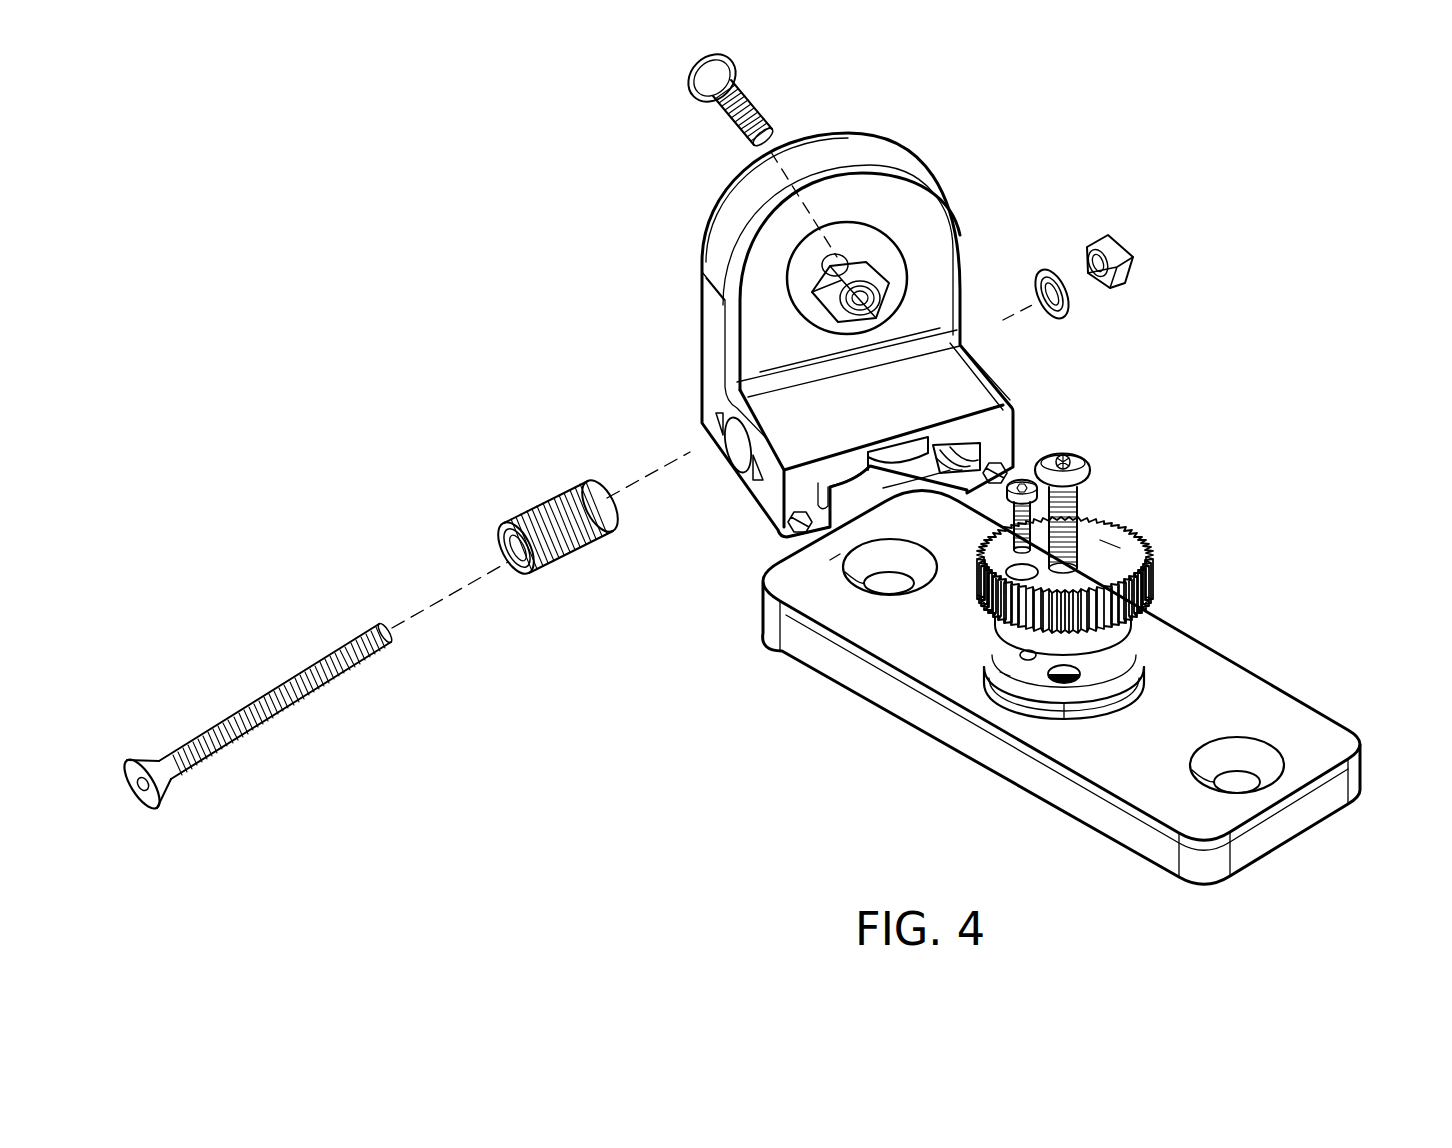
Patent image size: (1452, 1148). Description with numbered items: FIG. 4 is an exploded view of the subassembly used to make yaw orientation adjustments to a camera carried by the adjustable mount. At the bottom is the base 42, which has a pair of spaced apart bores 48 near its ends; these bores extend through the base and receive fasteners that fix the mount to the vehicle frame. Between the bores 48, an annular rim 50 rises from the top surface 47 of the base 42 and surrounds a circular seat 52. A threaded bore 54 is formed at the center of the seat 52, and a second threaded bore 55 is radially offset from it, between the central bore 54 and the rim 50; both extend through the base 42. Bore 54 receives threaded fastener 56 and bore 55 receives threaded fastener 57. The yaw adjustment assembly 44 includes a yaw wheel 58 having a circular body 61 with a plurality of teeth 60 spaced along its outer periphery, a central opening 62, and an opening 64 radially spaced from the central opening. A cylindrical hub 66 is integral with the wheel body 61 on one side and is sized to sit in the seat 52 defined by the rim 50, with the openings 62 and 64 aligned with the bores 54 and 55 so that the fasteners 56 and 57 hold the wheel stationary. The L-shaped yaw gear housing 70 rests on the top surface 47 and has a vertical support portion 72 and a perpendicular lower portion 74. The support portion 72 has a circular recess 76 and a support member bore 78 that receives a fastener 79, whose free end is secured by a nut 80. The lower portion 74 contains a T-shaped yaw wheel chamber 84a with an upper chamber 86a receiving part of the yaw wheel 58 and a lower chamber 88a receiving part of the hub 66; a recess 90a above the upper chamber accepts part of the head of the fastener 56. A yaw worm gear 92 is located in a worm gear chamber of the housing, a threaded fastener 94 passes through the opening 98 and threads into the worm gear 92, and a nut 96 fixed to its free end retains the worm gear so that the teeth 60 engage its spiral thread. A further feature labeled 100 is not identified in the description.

The base 42 is at (1083, 688).
The yaw adjustment assembly 44 is at (1045, 648).
The top surface 47 is at (940, 675).
The bores 48 is at (858, 588).
The annular rim 50 is at (1145, 668).
The seat 52 is at (1005, 660).
The threaded bore 54 is at (1063, 680).
The second threaded bore 55 is at (1038, 670).
The threaded fastener 56 is at (1067, 500).
The threaded fastener 57 is at (1085, 457).
The yaw wheel 58 is at (1136, 567).
The teeth 60 is at (1130, 531).
The circular body 61 is at (1128, 555).
The central opening 62 is at (1045, 761).
The opening 64 is at (1077, 572).
The cylindrical hub 66 is at (1152, 700).
The yaw gear housing 70 is at (897, 128).
The support portion 72 is at (930, 228).
The lower portion 74 is at (960, 395).
The circular recess 76 is at (817, 322).
The support member bore 78 is at (825, 268).
The fastener 79 is at (757, 103).
The nut 80 is at (875, 313).
The yaw wheel chamber 84a is at (1000, 437).
The upper chamber 86a is at (775, 512).
The lower chamber 88a is at (790, 553).
The recess 90a is at (987, 410).
The yaw worm gear 92 is at (540, 505).
The fastener 94 is at (230, 718).
The nut 96 is at (1122, 282).
The opening 98 is at (733, 440).
The chamfered edge 100 is at (722, 432).